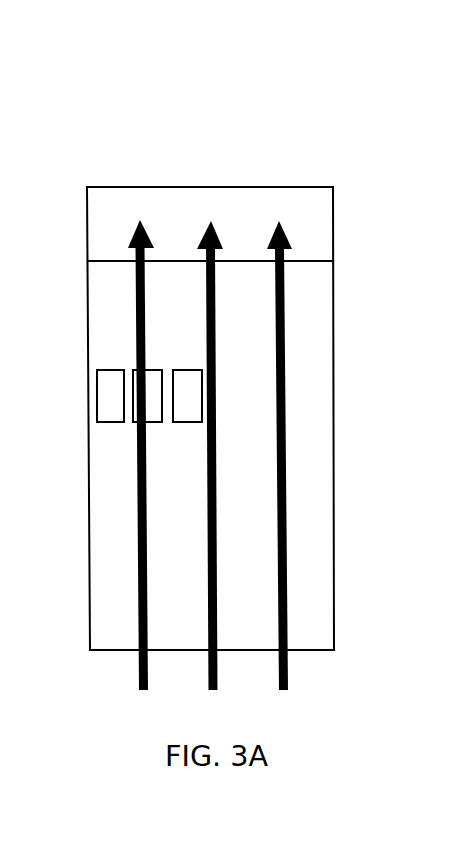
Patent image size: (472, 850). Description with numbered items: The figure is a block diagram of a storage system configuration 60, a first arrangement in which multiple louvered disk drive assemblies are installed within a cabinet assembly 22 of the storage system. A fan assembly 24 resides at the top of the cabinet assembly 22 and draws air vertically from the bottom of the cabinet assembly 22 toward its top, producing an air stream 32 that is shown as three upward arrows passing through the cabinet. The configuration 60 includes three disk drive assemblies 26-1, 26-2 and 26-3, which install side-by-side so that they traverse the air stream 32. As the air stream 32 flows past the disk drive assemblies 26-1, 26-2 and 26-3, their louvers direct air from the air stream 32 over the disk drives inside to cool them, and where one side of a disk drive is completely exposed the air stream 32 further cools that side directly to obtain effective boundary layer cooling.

The storage system configuration 60 is at (225, 120).
The cabinet assembly 22 is at (326, 432).
The fan assembly 24 is at (322, 228).
The air stream 32 is at (289, 671).
The disk drive assembly 26-1 is at (115, 423).
The disk drive assembly 26-2 is at (153, 423).
The disk drive assembly 26-3 is at (187, 370).